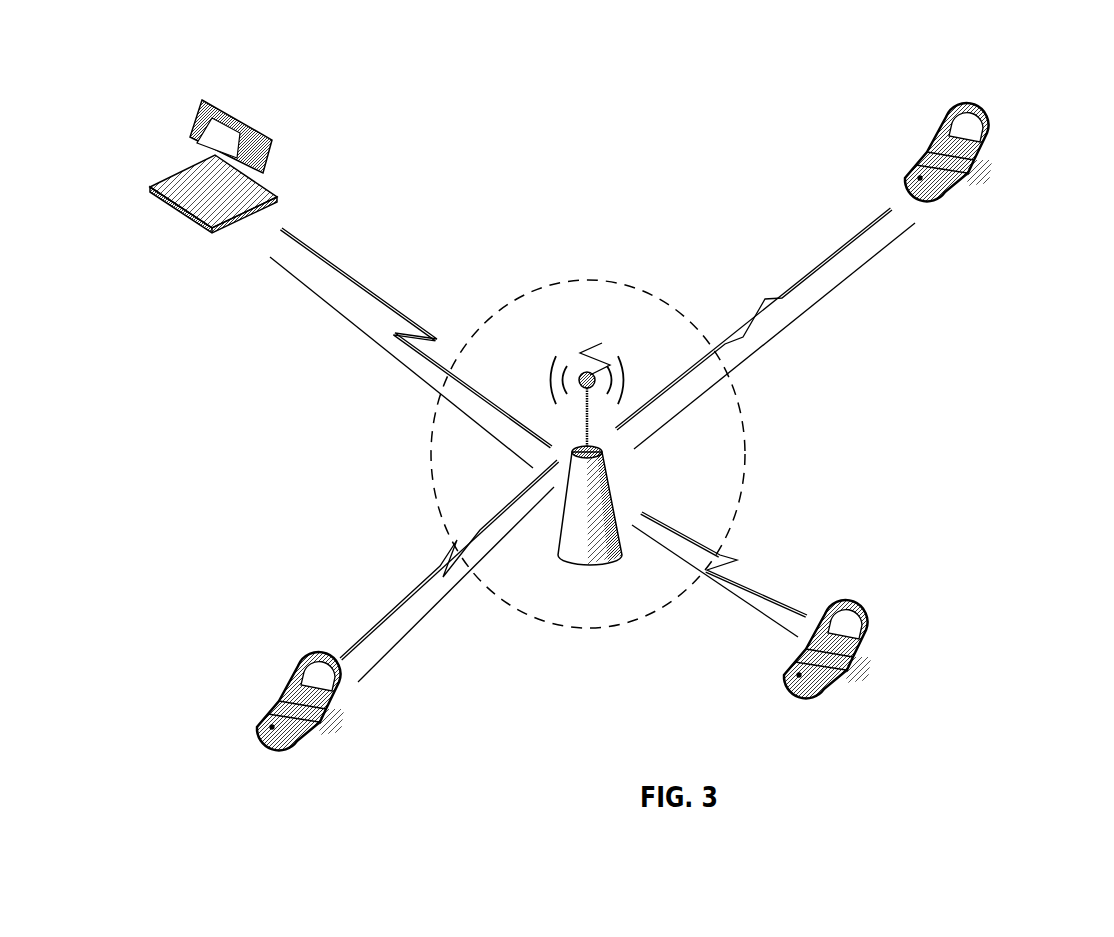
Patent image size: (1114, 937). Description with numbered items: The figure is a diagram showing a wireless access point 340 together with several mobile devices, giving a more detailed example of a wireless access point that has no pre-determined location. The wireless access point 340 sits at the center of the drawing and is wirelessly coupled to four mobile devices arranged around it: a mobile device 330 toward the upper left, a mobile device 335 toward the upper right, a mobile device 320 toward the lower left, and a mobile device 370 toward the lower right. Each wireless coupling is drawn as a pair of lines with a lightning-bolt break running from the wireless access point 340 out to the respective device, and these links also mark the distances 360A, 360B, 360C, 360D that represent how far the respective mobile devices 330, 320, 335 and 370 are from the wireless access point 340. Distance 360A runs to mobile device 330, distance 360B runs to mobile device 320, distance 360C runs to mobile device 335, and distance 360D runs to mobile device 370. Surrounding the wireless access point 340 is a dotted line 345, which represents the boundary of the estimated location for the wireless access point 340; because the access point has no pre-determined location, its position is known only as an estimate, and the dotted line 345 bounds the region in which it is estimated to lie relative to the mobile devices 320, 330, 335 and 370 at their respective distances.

The mobile device 320 is at (342, 717).
The mobile device 330 is at (273, 138).
The mobile device 335 is at (993, 167).
The wireless access point 340 is at (605, 454).
The dotted line 345 is at (745, 437).
The distance 360A is at (392, 352).
The distance 360B is at (440, 600).
The distance 360C is at (790, 325).
The distance 360D is at (757, 612).
The mobile device 370 is at (860, 608).